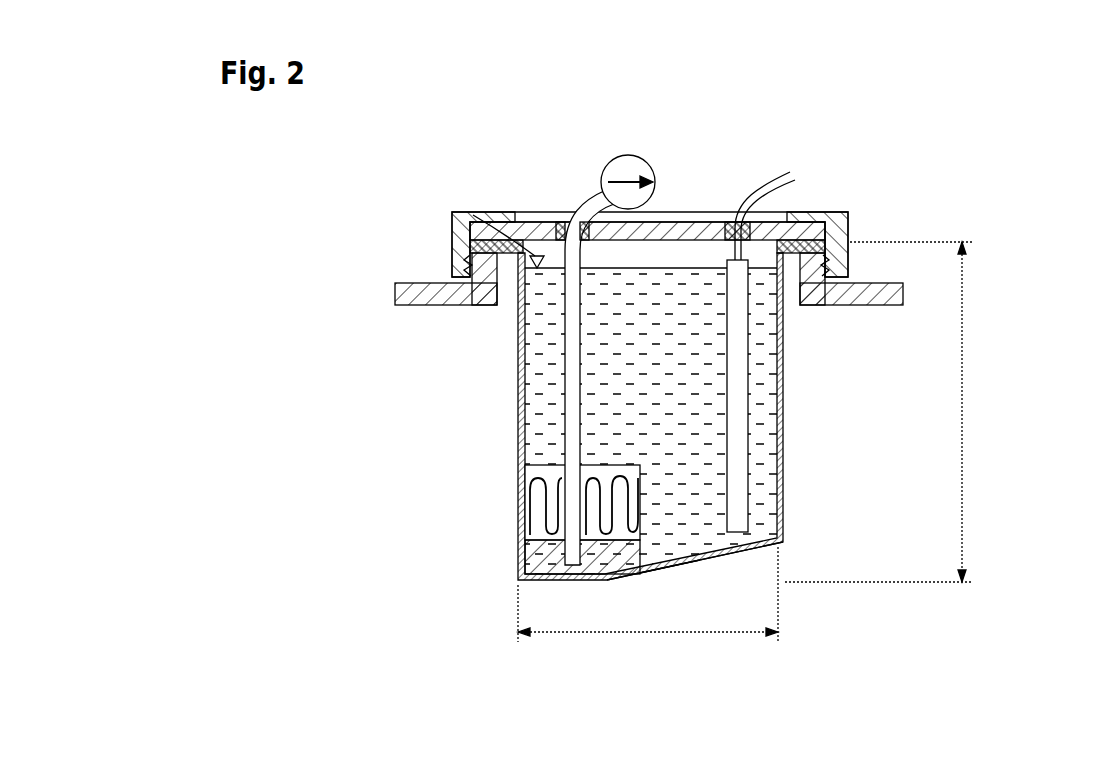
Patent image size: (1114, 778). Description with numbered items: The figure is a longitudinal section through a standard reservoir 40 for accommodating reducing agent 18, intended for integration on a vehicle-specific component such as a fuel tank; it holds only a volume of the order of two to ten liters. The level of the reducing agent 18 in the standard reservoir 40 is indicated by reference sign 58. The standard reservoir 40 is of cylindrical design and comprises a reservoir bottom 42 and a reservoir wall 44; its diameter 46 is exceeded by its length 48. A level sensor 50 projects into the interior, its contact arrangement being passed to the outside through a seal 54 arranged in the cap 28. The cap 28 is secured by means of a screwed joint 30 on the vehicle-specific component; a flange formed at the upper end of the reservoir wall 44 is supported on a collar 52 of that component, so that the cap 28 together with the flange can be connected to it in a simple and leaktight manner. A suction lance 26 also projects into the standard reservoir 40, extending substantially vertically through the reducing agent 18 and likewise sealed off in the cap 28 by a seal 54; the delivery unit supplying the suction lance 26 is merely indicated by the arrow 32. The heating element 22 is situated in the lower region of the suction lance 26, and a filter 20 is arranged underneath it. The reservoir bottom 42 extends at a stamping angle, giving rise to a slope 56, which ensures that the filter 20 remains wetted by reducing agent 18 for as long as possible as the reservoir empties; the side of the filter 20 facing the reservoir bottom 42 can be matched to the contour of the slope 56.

The reducing agent 18 is at (545, 338).
The filter 20 is at (530, 558).
The heating element 22 is at (530, 492).
The suction lance 26 is at (572, 418).
The cap 28 is at (662, 234).
The screwed joint 30 is at (849, 215).
The flow direction symbol 32 is at (617, 168).
The standard reservoir 40 is at (509, 189).
The reservoir bottom 42 is at (735, 558).
The reservoir wall 44 is at (520, 368).
The diameter 46 is at (650, 636).
The length 48 is at (962, 415).
The level sensor 50 is at (740, 340).
The collar 52 is at (470, 266).
The seal 54 is at (560, 232).
The slope 56 is at (695, 570).
The level 58 is at (469, 252).